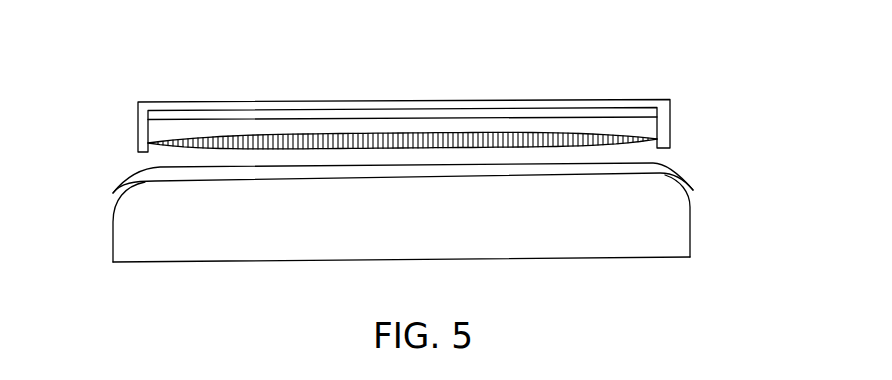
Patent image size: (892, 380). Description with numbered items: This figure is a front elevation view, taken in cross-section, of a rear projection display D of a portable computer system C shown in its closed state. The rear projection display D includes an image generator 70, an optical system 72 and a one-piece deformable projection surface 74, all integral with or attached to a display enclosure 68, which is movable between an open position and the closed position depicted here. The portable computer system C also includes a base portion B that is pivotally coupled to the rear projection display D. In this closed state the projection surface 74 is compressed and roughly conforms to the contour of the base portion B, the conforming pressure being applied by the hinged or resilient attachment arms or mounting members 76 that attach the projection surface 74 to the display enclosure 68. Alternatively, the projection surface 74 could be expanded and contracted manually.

The display enclosure 68 is at (663, 115).
The image generator 70 is at (493, 113).
The optical system 72 is at (342, 135).
The projection surface 74 is at (125, 185).
The attachment arms or mounting members 76 is at (117, 187).
The base portion B is at (485, 233).
The portable computer system C is at (651, 66).
The rear projection display D is at (736, 88).